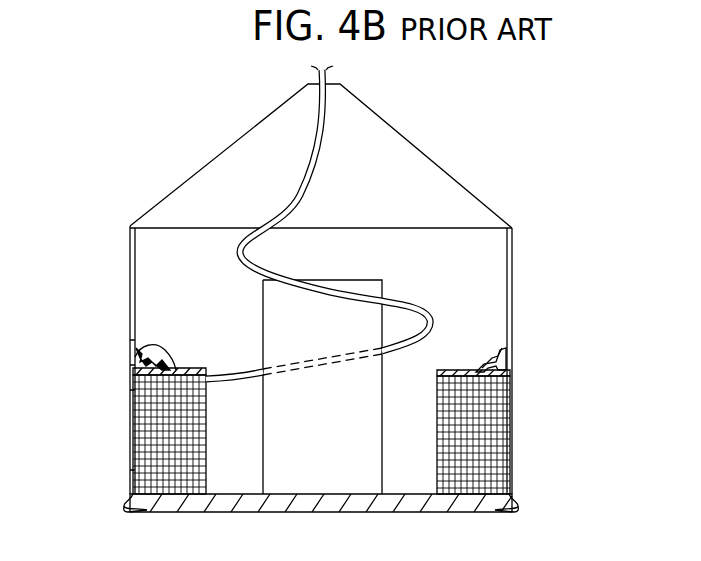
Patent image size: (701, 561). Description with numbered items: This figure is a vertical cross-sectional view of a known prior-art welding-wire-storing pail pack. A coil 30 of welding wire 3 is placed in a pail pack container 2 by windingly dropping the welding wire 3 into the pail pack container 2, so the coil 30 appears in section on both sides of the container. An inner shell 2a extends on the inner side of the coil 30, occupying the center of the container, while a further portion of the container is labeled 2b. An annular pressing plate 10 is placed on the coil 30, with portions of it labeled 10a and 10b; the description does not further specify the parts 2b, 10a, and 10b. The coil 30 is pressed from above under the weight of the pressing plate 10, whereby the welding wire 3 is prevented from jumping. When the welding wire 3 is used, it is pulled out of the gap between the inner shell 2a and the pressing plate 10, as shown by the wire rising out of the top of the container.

The pail pack container 2 is at (474, 113).
The inner shell 2a is at (267, 308).
The side wall 2b is at (517, 247).
The welding wire 3 is at (313, 148).
The annular pressing plate 10 is at (512, 344).
The contact portion 10a is at (143, 344).
The contact base 10b is at (145, 368).
The coil 30 is at (504, 394).